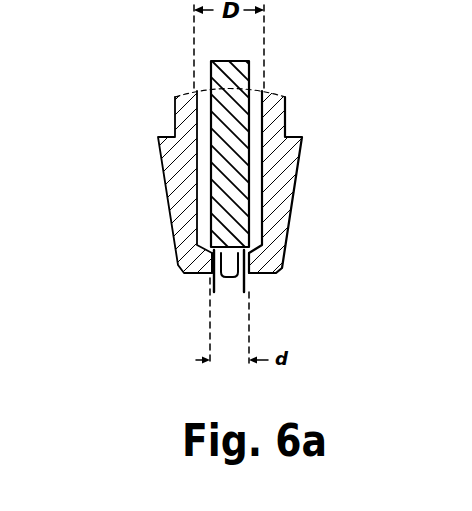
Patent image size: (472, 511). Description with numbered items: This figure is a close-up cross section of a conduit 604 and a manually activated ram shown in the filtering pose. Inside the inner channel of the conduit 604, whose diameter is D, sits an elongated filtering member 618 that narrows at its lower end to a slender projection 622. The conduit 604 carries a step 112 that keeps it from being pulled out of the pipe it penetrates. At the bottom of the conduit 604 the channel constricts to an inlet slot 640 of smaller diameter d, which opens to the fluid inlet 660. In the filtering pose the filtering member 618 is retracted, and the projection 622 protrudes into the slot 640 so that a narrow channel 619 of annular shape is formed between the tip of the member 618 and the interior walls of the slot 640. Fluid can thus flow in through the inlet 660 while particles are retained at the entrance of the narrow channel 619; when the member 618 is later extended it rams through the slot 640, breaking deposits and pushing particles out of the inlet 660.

The step 112 is at (302, 137).
The filtering member 618 is at (211, 110).
The slender projection 622 is at (230, 263).
The inlet slot 640 is at (210, 263).
The fluid inlet 660 is at (213, 278).
The narrow channel 619 is at (214, 280).
The conduit 604 is at (283, 248).